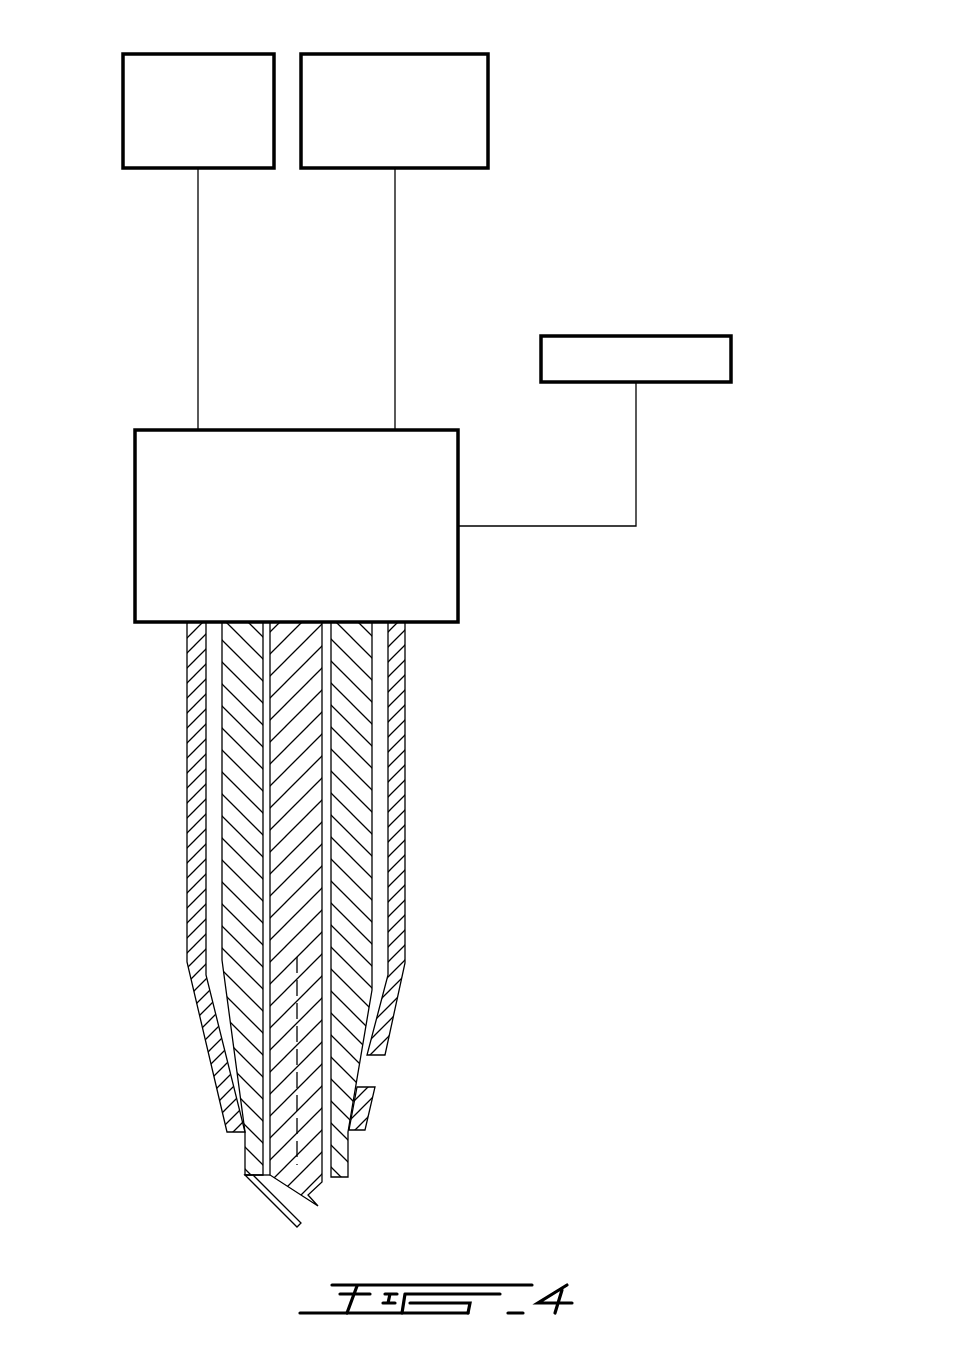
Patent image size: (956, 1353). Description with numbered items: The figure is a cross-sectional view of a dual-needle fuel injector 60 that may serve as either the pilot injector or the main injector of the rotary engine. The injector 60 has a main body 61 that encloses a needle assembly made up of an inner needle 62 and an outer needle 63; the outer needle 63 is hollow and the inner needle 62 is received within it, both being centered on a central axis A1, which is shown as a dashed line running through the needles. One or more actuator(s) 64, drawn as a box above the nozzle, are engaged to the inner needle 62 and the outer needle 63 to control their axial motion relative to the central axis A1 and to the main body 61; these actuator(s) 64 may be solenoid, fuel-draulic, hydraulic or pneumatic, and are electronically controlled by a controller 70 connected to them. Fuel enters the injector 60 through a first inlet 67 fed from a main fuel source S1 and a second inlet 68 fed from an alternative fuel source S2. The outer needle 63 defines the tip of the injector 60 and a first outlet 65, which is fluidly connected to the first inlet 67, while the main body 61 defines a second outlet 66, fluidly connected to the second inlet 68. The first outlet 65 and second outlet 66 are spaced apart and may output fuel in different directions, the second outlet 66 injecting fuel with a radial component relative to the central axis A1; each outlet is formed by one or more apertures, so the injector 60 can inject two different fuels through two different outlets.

The injector 60 is at (716, 113).
The main fuel source S1 is at (123, 108).
The alternative fuel source S2 is at (488, 108).
The first inlet 67 is at (198, 430).
The second inlet 68 is at (395, 430).
The controller 70 is at (731, 360).
The actuator(s) 64 is at (458, 568).
The main body 61 is at (395, 772).
The outer needle 63 is at (350, 720).
The inner needle 62 is at (297, 777).
The central axis A1 is at (297, 973).
The second outlet 66 is at (362, 1083).
The first outlet 65 is at (337, 1177).